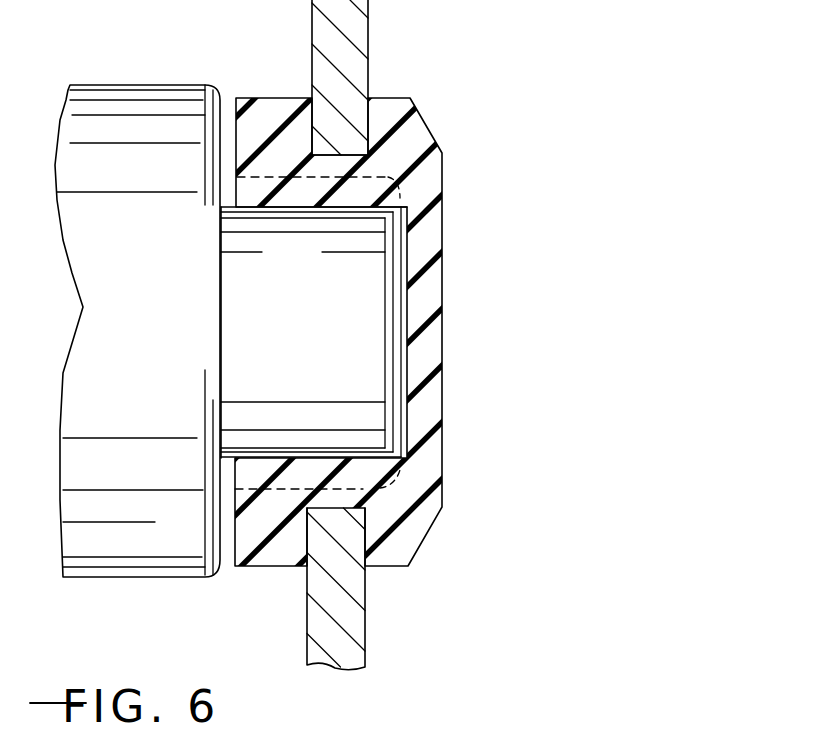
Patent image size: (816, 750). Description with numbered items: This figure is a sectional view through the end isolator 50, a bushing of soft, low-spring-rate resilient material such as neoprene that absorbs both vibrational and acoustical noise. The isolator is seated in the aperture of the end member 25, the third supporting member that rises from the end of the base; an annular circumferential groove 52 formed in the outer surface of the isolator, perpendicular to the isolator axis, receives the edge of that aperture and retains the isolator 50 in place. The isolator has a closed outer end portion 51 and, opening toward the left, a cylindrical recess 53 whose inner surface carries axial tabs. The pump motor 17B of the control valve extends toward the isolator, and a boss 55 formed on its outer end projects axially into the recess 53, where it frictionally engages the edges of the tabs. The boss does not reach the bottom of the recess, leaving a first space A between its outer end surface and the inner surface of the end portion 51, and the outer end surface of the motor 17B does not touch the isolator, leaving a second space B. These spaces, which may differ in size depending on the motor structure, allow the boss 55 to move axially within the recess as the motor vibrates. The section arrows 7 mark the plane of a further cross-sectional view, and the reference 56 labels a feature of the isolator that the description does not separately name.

The pump motor 17B is at (170, 343).
The end member 25 is at (363, 33).
The end isolator 50 is at (460, 245).
The closed outer end portion 51 is at (425, 302).
The annular circumferential groove 52 is at (363, 113).
The cylindrical recess 53 is at (300, 208).
The boss 55 is at (330, 365).
The lower wall portion 56 is at (235, 530).
The section line 7- 7 is at (282, 110).
The first space A is at (382, 150).
The second space B is at (268, 15).